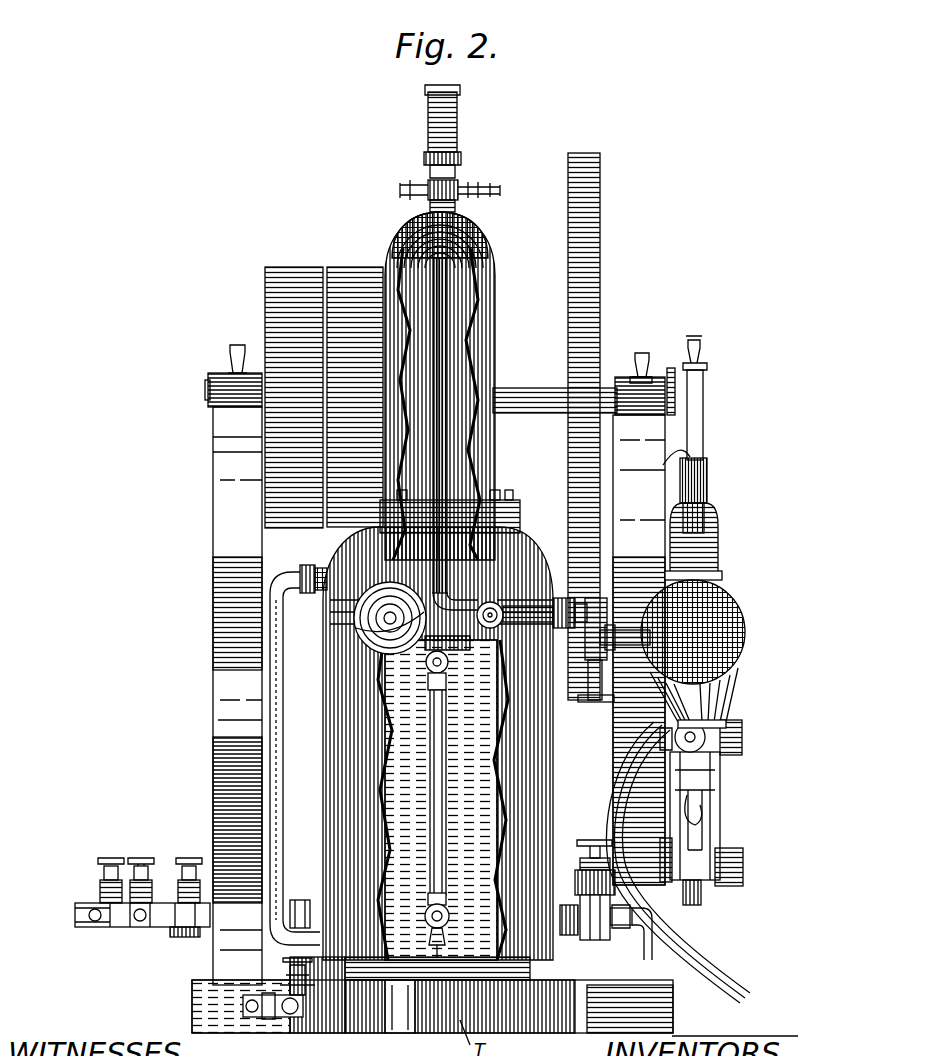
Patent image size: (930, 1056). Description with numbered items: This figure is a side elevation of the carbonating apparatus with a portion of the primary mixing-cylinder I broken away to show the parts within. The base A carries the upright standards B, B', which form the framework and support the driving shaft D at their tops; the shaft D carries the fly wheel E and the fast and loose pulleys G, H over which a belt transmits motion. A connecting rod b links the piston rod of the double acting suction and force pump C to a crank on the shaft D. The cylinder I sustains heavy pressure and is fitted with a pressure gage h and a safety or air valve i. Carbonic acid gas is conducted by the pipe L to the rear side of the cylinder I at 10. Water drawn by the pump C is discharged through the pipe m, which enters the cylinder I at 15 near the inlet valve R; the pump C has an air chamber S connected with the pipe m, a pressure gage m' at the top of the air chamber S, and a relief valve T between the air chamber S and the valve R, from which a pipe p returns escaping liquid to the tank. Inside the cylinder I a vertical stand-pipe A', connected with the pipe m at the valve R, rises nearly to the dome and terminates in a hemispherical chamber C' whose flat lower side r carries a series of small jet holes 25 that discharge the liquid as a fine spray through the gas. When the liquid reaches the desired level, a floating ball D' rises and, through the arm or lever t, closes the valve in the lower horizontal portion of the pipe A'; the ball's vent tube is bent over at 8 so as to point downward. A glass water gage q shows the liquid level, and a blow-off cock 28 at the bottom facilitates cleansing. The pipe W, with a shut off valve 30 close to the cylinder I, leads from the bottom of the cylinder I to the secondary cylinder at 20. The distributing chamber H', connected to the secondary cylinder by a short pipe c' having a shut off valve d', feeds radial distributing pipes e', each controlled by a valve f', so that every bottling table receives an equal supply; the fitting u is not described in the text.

The pressure gage h is at (458, 128).
The safety or air valve i is at (500, 190).
The hemispherical chamber C' is at (502, 261).
The jet holes 25 is at (488, 270).
The flat lower side r is at (486, 288).
The primary mixing-cylinder I is at (497, 322).
The fast pulley G is at (289, 272).
The loose pulley H is at (355, 383).
The driving shaft D is at (419, 380).
The fly wheel E is at (568, 440).
The vertical tube or stand-pipe A' is at (484, 434).
The double acting suction and force pump C is at (699, 609).
The connecting rod b is at (703, 400).
The upright standard B is at (706, 447).
The pressure gage m' is at (720, 495).
The pipe connection point 15 is at (558, 600).
The air chamber S is at (730, 648).
The discharge pipe m is at (707, 747).
The relief valve T is at (705, 752).
The pipe connection point 10 is at (310, 572).
The floating ball D' is at (359, 618).
The bent end of tube 8 is at (403, 604).
The arm or lever t is at (447, 637).
The coupling wheel u is at (515, 624).
The gas pipe L is at (270, 606).
The upright standard B' is at (215, 696).
The glass water gage q is at (432, 832).
The short pipe c' is at (300, 905).
The distributing chamber H' is at (142, 877).
The valve f' is at (150, 860).
The radial distributing pipe e' is at (113, 942).
The shut off valve d' is at (216, 944).
The base A is at (471, 996).
The blow-off cock 28 is at (300, 1012).
The pipe W is at (300, 1000).
The inlet valve R is at (585, 702).
The pipe connection point 20 is at (580, 905).
The return pipe p is at (690, 952).
The shut off valve 30 is at (586, 938).